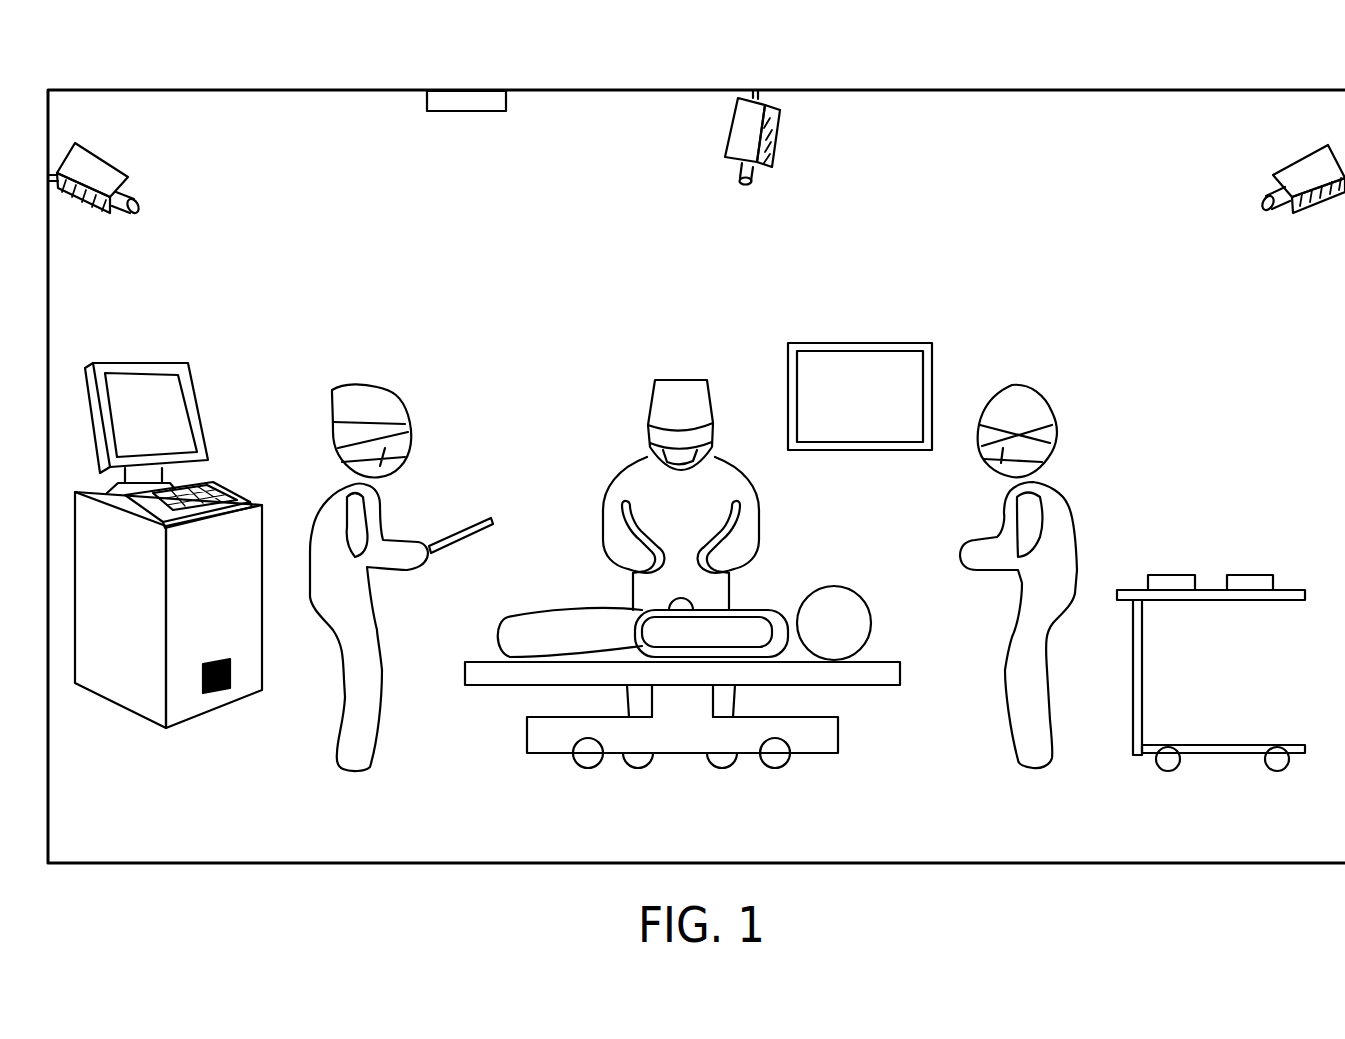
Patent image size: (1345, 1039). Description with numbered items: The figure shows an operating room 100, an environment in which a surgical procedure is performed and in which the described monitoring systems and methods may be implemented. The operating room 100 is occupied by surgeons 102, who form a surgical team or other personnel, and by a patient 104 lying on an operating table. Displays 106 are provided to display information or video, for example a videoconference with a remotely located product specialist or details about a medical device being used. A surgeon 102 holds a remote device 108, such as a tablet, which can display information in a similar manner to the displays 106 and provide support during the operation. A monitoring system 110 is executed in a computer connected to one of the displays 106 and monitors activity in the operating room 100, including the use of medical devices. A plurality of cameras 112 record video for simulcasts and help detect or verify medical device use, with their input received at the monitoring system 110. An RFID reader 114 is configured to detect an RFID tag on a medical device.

The operating room 100 is at (334, 50).
The surgeons 102 is at (355, 408).
The patient 104 is at (772, 615).
The displays 106 is at (132, 385).
The remote devices 108 is at (483, 517).
The monitoring system 110 is at (213, 680).
The cameras 112 is at (95, 172).
The RFID reader 114 is at (475, 100).